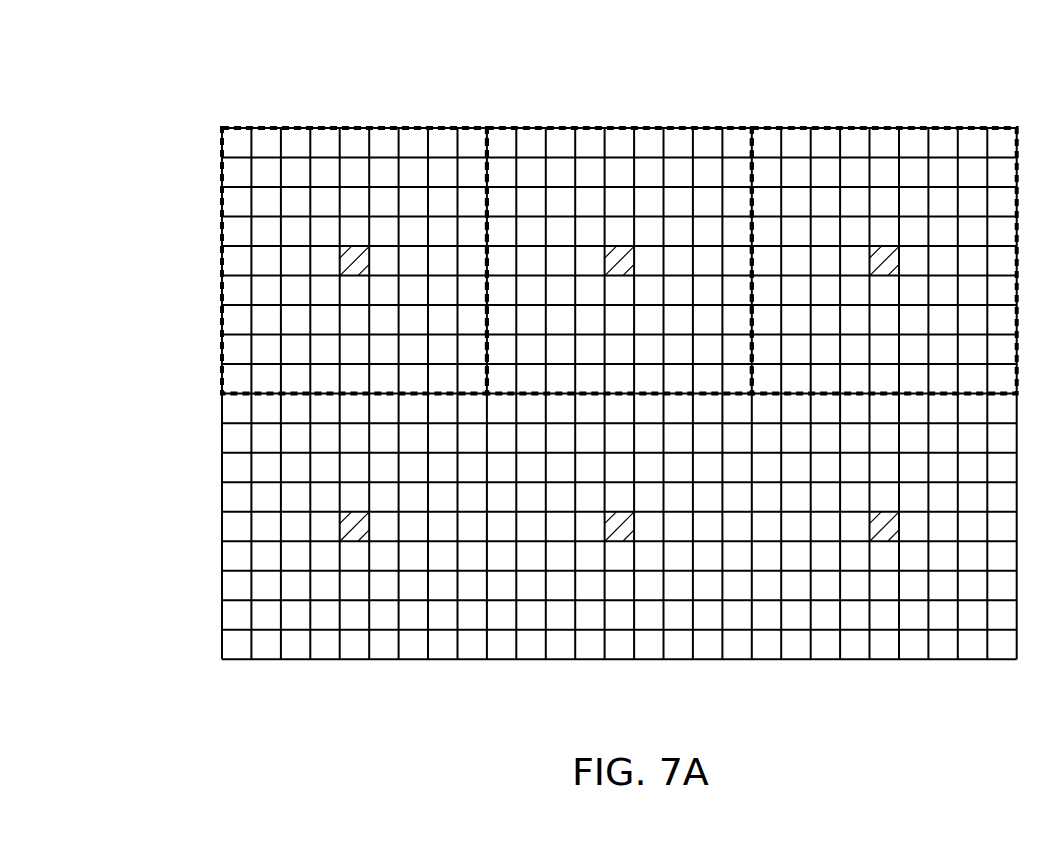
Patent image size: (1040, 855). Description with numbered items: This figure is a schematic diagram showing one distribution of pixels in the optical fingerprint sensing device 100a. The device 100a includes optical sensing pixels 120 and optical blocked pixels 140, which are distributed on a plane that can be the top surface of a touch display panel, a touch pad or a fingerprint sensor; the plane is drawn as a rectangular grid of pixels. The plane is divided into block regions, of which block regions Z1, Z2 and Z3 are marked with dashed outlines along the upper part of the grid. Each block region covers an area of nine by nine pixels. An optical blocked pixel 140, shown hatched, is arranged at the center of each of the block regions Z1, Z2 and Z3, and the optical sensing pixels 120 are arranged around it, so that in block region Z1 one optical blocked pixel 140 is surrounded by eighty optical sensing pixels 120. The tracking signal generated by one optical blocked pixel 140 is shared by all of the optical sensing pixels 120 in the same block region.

The optical fingerprint sensing device 100a is at (87, 95).
The optical sensing pixels 120 is at (323, 258).
The optical blocked pixels 140 is at (357, 252).
The block region Z1 is at (292, 128).
The block region Z2 is at (617, 128).
The block region Z3 is at (937, 127).